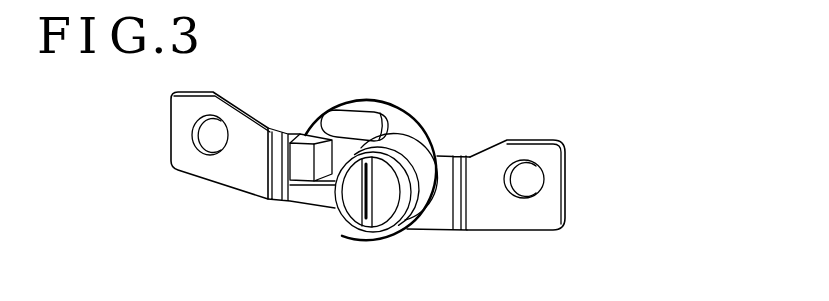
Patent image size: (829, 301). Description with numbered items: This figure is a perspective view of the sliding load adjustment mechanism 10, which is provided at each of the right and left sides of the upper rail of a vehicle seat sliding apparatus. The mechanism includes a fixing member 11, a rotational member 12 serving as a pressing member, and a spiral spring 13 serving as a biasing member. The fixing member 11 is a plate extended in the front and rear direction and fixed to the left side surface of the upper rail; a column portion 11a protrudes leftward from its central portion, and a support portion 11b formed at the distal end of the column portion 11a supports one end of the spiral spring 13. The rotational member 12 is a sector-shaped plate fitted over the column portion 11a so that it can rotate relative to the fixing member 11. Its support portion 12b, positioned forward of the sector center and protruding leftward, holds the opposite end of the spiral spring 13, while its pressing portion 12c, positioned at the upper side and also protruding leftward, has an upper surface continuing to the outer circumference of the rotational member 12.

The sliding load adjustment mechanism 10 is at (561, 105).
The fixing member 11 is at (487, 168).
The column portion 11a is at (375, 205).
The support portion 11b is at (372, 229).
The rotational member 12 is at (400, 142).
The support portion 12b is at (289, 174).
The pressing portion 12c is at (349, 123).
The spiral spring 13 is at (430, 198).